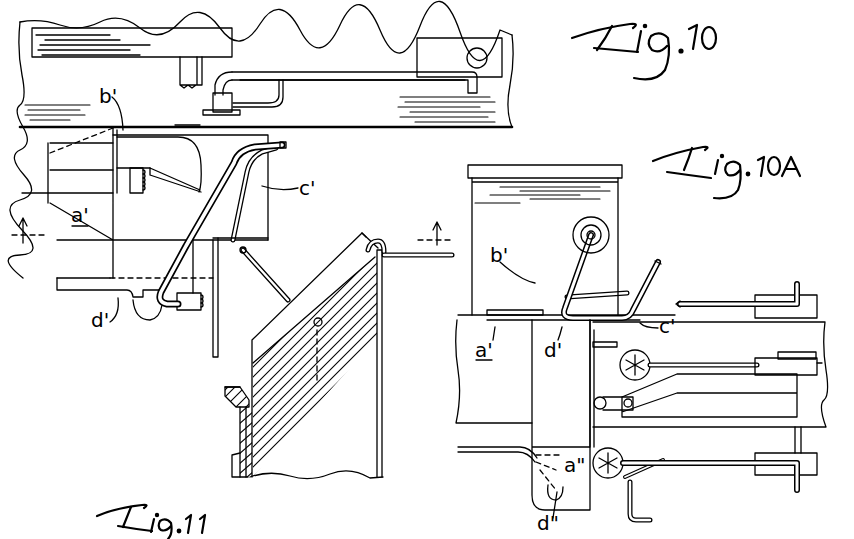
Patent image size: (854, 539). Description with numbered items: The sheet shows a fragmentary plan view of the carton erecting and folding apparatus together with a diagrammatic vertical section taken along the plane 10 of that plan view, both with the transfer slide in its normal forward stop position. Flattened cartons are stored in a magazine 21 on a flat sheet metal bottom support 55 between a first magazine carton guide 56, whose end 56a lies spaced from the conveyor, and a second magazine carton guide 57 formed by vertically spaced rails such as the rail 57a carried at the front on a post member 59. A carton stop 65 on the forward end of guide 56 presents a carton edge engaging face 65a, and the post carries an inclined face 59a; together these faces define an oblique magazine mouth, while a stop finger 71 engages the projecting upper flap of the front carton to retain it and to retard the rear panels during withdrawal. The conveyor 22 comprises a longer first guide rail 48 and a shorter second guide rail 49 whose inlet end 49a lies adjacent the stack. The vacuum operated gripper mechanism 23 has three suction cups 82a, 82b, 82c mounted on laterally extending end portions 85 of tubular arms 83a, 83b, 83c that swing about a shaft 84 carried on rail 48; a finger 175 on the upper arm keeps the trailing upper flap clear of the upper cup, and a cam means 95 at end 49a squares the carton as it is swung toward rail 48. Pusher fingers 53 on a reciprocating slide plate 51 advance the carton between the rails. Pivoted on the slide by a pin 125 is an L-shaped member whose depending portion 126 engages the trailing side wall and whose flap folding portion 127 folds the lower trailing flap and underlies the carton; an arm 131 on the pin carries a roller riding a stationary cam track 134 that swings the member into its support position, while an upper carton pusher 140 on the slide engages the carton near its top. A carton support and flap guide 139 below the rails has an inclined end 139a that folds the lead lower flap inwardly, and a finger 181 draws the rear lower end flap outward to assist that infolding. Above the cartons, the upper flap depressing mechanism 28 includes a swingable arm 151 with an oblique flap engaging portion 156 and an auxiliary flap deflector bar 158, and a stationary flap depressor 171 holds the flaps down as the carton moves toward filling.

In FIG. 10, the section plane 10— 10 is at (236, 252).
In FIG. 10, the magazine 21 is at (388, 387).
In FIG. 10, the conveyor 22 is at (398, 130).
In FIG. 10, the vacuum operated gripper mechanism 23 is at (355, 64).
In FIG. 10, the upper flap depressing mechanism 28 is at (292, 152).
In FIG. 10A, the upper flap depressing mechanism 28 is at (661, 252).
In FIG. 10, the first conveyor carton guide rail 48 is at (492, 110).
In FIG. 10, the second conveyor carton guide rail 49 is at (81, 280).
In FIG. 10, the inlet end of rail 49 49a is at (217, 263).
In FIG. 10A, the slide plate 51 is at (806, 343).
In FIG. 10, the pusher fingers 53 is at (196, 125).
In FIG. 10, the bottom support 55 is at (336, 456).
In FIG. 10, the first magazine carton guide 56 is at (386, 442).
In FIG. 10, the end of first magazine carton guide 56a is at (402, 258).
In FIG. 10, the second magazine carton guide 57 is at (243, 473).
In FIG. 10, the rail of second magazine carton guide 57a is at (241, 430).
In FIG. 10, the post member 59 is at (226, 400).
In FIG. 10, the carton edge engaging face of post 59a is at (228, 387).
In FIG. 10, the carton stop 65 is at (378, 240).
In FIG. 10, the carton edge engaging face of stop 65a is at (362, 238).
In FIG. 10, the stop finger 71 is at (318, 318).
In FIG. 10, the suction cup 82a is at (237, 116).
In FIG. 10A, the suction cup 82b is at (650, 355).
In FIG. 10A, the suction cup 82c is at (610, 480).
In FIG. 10, the tubular arm 83a is at (347, 89).
In FIG. 10A, the tubular arm 83a is at (700, 302).
In FIG. 10A, the tubular arm 83b is at (702, 362).
In FIG. 10A, the tubular arm 83c is at (698, 460).
In FIG. 10, the shaft 84 is at (467, 59).
In FIG. 10, the laterally extending end portion 85 is at (221, 82).
In FIG. 10, the cam means 95 is at (219, 320).
In FIG. 10A, the pin 125 is at (598, 400).
In FIG. 10A, the depending portion 126 is at (620, 410).
In FIG. 10A, the flap folding portion 127 is at (550, 444).
In FIG. 10A, the rearwardly extending arm 131 is at (613, 395).
In FIG. 10A, the stationary cam track 134 is at (728, 388).
In FIG. 10A, the carton support and flap guide 139 is at (462, 453).
In FIG. 10A, the inclined end 139a is at (536, 478).
In FIG. 10A, the upper carton pusher 140 is at (613, 354).
In FIG. 10, the flap depressing arm 151 is at (156, 316).
In FIG. 10A, the flap depressing arm 151 is at (577, 257).
In FIG. 10, the flap engaging portion 156 is at (205, 213).
In FIG. 10, the auxiliary flap deflector bar 158 is at (205, 260).
In FIG. 10, the stationary flap depressor 171 is at (147, 148).
In FIG. 10, the finger 175 is at (251, 105).
In FIG. 10, the finger 181 is at (249, 251).
In FIG. 10A, the finger 181 is at (652, 497).